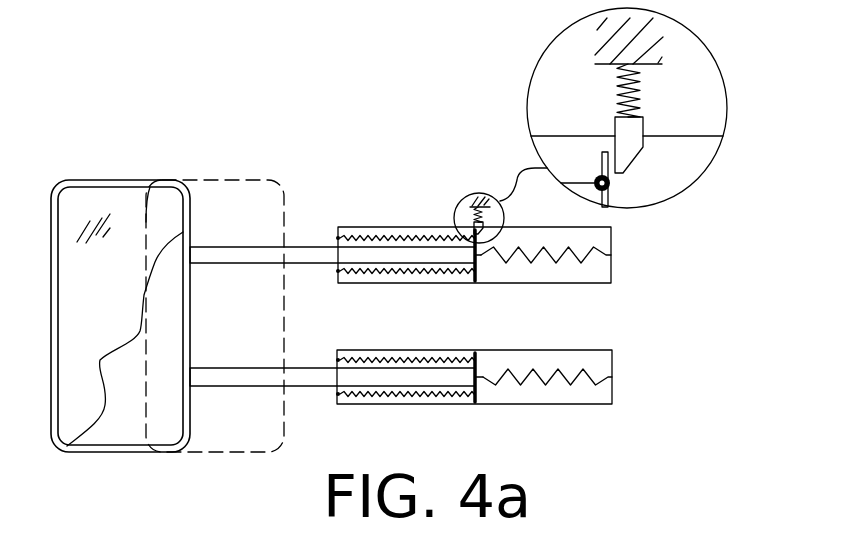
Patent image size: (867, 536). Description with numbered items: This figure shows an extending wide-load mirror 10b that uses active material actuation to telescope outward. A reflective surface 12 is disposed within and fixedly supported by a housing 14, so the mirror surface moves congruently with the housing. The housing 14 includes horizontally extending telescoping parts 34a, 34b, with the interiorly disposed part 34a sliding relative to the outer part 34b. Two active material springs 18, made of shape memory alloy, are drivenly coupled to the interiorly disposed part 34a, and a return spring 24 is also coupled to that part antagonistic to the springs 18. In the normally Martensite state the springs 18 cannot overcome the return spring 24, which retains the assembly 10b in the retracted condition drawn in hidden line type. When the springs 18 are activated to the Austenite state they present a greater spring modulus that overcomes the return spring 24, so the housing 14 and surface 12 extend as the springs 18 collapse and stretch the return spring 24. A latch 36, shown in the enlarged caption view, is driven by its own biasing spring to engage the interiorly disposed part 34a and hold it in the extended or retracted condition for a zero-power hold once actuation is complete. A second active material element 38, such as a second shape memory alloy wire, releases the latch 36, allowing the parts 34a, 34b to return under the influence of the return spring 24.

The wide-load mirror 10b is at (385, 139).
The reflective surface 12 is at (112, 295).
The housing 14 is at (131, 181).
The active material spring 18 is at (381, 360).
The return spring 24 is at (535, 369).
The interiorly disposed telescoping part 34a is at (303, 246).
The telescoping part 34b is at (349, 227).
The latch 36 is at (639, 172).
The second active material element 38 is at (617, 74).